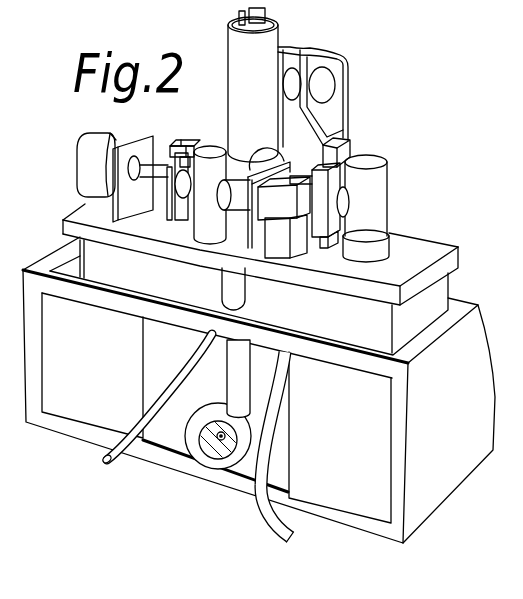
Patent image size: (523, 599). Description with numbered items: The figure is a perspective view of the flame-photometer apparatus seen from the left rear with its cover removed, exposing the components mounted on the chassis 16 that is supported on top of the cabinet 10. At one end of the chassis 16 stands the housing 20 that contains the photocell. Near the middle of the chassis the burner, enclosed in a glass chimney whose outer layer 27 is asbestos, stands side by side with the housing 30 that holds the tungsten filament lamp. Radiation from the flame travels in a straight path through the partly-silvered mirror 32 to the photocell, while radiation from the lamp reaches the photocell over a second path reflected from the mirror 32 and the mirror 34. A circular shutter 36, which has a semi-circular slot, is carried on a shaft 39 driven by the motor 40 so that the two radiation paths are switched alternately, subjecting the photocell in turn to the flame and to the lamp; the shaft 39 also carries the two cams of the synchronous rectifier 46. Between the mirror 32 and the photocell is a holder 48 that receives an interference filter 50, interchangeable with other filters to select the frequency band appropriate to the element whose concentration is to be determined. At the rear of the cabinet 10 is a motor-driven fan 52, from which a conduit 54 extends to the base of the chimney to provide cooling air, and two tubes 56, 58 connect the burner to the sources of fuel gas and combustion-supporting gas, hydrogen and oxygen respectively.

The cabinet 10 is at (482, 342).
The chassis 16 is at (458, 255).
The housing 20 is at (380, 205).
The outer layer 27 is at (233, 43).
The housing 30 is at (210, 147).
The partly-silvered mirror 32 is at (307, 170).
The mirror 34 is at (276, 210).
The circular shutter 36 is at (267, 163).
The shaft 39 is at (178, 185).
The motor 40 is at (100, 138).
The synchronous rectifier 46 is at (181, 133).
The holder 48 is at (340, 178).
The interference filter 50 is at (347, 148).
The motor-driven fan 52 is at (205, 414).
The conduit 54 is at (245, 382).
The tube 56 is at (267, 513).
The tube 58 is at (135, 425).